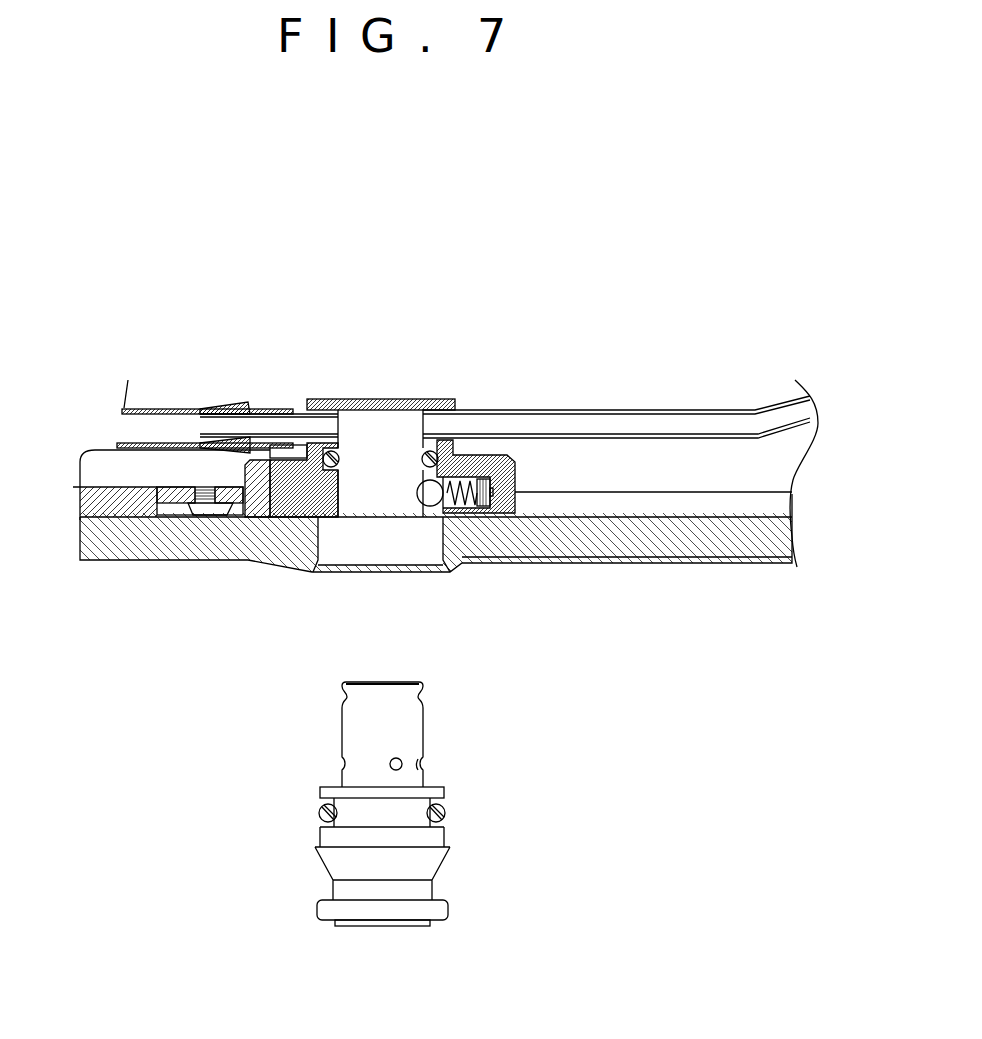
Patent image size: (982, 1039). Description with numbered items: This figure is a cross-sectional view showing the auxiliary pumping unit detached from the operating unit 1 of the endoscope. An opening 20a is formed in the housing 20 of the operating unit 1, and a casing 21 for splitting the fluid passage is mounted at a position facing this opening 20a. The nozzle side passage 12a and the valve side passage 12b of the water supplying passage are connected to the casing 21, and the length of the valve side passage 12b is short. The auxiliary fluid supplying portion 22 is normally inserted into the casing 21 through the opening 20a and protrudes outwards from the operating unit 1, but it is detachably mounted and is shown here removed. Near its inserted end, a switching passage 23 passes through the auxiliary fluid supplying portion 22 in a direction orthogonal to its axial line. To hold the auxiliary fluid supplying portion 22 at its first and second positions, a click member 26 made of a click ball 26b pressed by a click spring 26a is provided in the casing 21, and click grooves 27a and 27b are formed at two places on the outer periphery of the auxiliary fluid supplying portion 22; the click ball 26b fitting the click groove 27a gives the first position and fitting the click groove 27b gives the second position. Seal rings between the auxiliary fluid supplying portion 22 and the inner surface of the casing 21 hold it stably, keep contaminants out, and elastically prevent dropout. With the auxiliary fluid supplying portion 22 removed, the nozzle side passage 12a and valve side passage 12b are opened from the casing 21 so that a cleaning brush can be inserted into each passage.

The operating unit 1 is at (424, 462).
The nozzle side passage 12a is at (158, 408).
The valve side passage 12b is at (647, 407).
The housing 20 is at (698, 538).
The opening 20a is at (318, 547).
The casing 21 is at (290, 487).
The auxiliary fluid supplying portion 22 is at (387, 836).
The switching passage 23 is at (422, 695).
The click member 26 is at (442, 496).
The click spring 26a is at (475, 493).
The click ball 26b is at (428, 497).
The click groove 27a is at (422, 765).
The click groove 27b is at (390, 765).